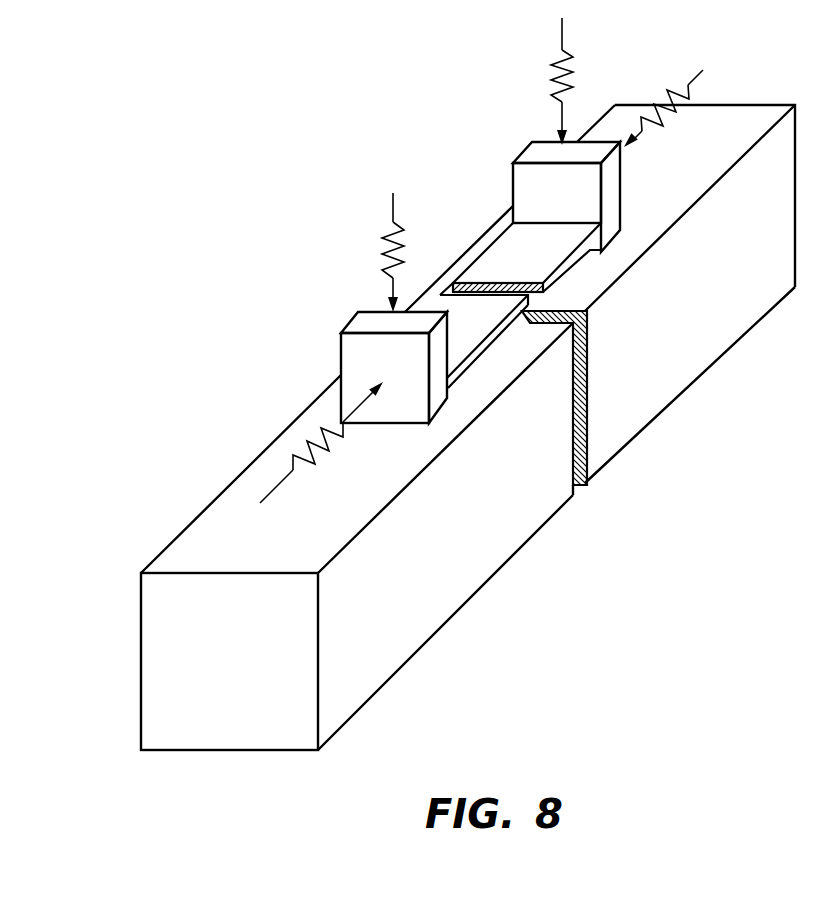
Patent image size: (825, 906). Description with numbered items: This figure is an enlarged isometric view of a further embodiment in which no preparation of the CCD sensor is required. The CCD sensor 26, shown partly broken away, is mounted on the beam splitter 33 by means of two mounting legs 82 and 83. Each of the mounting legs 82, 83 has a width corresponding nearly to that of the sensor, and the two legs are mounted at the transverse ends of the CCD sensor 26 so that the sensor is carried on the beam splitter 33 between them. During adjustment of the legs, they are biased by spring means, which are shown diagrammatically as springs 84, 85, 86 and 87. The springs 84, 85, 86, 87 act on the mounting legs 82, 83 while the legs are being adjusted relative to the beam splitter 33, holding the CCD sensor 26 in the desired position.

The CCD sensor 26 is at (471, 206).
The beam splitter 33 is at (212, 486).
The mounting leg 82 is at (367, 333).
The mounting leg 83 is at (540, 157).
The spring 84 is at (310, 435).
The spring 85 is at (380, 253).
The spring 86 is at (570, 84).
The spring 87 is at (675, 108).